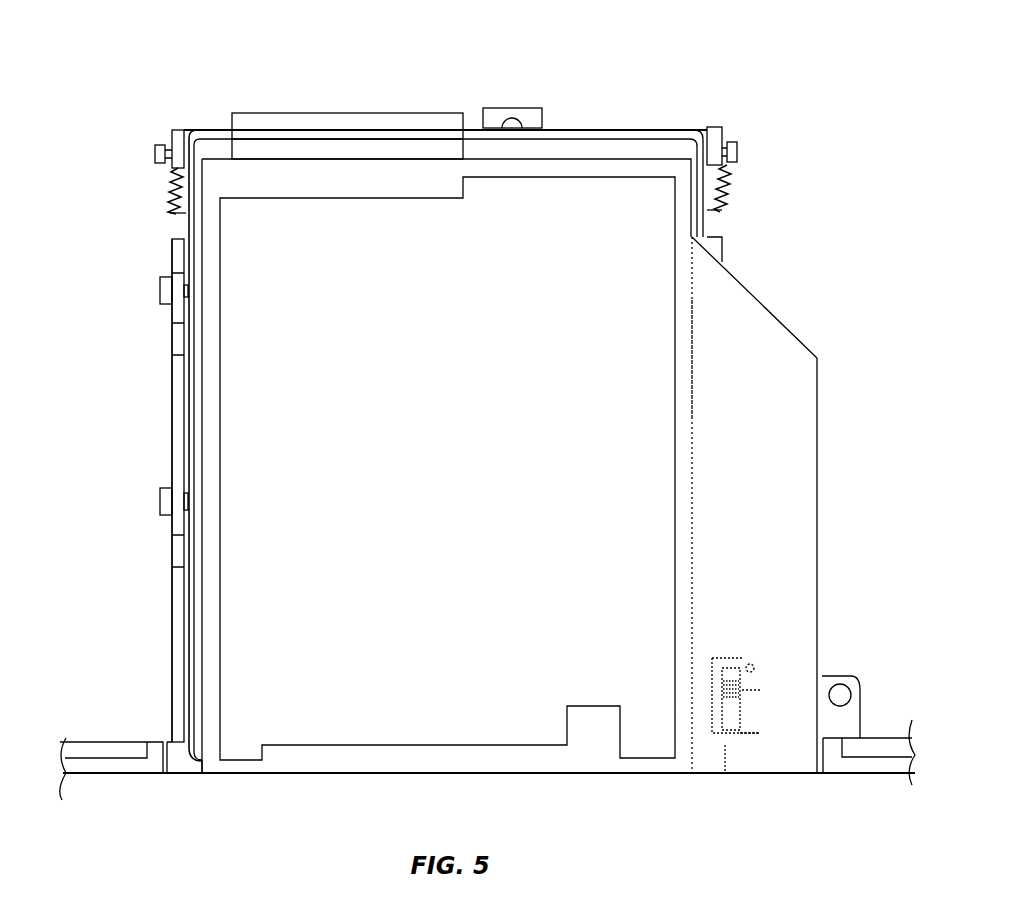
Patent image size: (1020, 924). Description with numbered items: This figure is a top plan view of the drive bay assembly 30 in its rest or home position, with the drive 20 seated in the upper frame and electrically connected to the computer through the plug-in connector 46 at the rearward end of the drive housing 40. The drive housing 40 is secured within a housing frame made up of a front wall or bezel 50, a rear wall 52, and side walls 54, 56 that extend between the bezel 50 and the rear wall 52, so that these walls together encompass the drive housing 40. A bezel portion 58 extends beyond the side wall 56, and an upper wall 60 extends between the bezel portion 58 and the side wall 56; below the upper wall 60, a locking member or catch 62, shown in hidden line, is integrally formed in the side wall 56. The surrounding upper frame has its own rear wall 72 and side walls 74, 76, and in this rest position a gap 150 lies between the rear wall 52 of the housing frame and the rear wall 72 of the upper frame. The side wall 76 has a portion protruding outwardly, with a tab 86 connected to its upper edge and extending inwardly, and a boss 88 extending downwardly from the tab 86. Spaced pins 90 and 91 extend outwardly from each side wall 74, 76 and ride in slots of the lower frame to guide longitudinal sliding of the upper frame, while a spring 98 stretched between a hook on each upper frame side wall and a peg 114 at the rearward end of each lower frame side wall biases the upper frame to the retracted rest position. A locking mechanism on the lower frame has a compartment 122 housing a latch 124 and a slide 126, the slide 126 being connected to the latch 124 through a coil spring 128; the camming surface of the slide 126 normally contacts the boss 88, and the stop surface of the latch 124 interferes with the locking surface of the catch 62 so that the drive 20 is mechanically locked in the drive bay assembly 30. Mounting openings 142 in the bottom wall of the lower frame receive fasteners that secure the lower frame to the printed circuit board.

The drive 20 is at (215, 685).
The drive bay assembly 30 is at (768, 50).
The drive housing 40 is at (237, 565).
The plug-in connector 46 is at (283, 122).
The bezel 50 is at (545, 776).
The rear wall 52 is at (565, 172).
The side wall 54 is at (210, 380).
The side wall 56 is at (690, 562).
The bezel portion 58 is at (728, 775).
The upper wall 60 is at (818, 545).
The catch 62 is at (712, 685).
The rear wall 72 is at (688, 126).
The side wall 74 is at (193, 442).
The side wall 76 is at (708, 453).
The tab 86 is at (753, 666).
The boss 88 is at (741, 657).
The pin 90 is at (160, 290).
The pin 91 is at (160, 500).
The spring 98 is at (170, 207).
The peg 114 is at (155, 150).
The compartment 122 is at (725, 745).
The latch 124 is at (722, 693).
The slide 126 is at (753, 724).
The coil spring 128 is at (742, 688).
The mounting opening 142 is at (512, 117).
The gap 150 is at (485, 153).